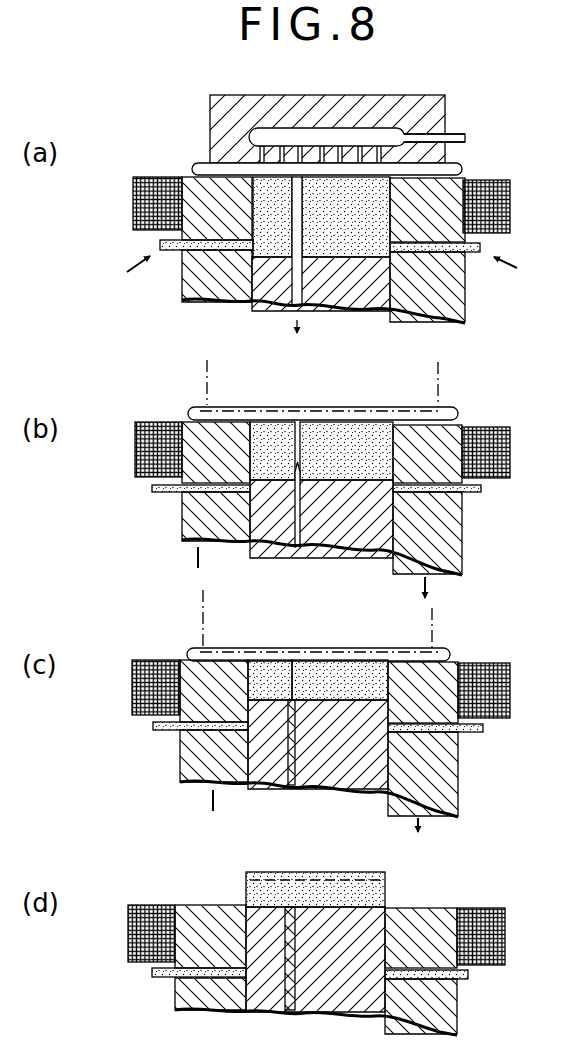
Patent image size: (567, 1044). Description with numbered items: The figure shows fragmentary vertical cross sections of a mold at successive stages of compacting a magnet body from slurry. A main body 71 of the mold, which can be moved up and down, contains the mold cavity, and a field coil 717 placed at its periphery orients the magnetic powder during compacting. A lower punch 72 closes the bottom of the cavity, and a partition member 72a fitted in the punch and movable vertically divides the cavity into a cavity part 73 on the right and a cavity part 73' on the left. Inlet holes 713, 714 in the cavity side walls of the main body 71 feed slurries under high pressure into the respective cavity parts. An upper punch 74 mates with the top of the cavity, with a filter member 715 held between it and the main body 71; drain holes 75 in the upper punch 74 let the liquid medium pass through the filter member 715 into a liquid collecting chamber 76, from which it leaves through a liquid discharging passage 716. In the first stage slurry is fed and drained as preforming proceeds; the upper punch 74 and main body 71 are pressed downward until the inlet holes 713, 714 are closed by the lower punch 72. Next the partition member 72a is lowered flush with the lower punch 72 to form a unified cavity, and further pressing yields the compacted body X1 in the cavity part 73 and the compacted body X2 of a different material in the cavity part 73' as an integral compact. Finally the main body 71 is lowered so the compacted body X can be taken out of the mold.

The main body of mold 71 is at (190, 290).
The lower punch 72 is at (358, 306).
The partition member 72a is at (292, 282).
The mold cavity part 73 is at (370, 328).
The cavity part 73' is at (247, 328).
The upper punch 74 is at (233, 108).
The drain holes 75 is at (352, 147).
The liquid collecting chamber 76 is at (303, 128).
The inlet hole 713 is at (482, 246).
The inlet hole 714 is at (160, 244).
The filter member 715 is at (197, 166).
The liquid discharging passage 716 is at (466, 137).
The field coil 717 is at (144, 183).
The compacted body X is at (372, 893).
The compacted body X1 is at (375, 677).
The compacted body of a different material X2 is at (268, 677).